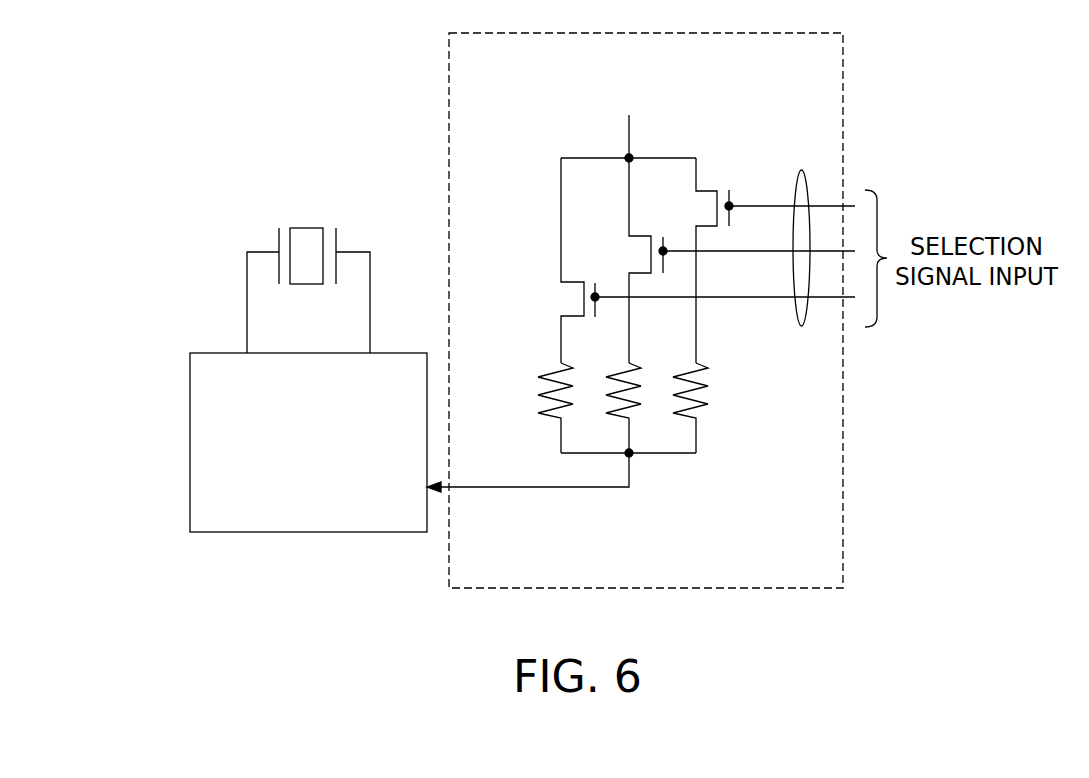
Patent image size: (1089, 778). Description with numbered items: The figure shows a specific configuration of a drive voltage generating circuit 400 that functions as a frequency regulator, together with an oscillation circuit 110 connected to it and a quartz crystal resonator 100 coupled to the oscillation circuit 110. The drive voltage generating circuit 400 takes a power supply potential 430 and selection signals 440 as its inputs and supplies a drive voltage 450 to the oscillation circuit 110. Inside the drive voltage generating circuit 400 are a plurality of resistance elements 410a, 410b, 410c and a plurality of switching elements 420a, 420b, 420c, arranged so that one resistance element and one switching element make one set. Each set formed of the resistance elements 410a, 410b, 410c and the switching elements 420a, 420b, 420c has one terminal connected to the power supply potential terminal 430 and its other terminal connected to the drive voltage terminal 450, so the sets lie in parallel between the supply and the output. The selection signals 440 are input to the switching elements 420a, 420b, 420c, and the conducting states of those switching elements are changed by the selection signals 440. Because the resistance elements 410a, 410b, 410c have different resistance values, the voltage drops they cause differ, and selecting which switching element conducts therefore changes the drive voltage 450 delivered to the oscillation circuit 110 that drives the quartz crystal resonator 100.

The quartz crystal resonator 100 is at (311, 228).
The oscillation circuit 110 is at (190, 398).
The drive voltage generating circuit 400 is at (843, 78).
The resistance element 410a is at (552, 370).
The resistance element 410b is at (640, 372).
The resistance element 410c is at (700, 386).
The switching element 420a is at (584, 292).
The switching element 420b is at (651, 248).
The switching element 420c is at (717, 202).
The power supply potential 430 is at (627, 137).
The selection signals 440 is at (798, 170).
The drive voltage 450 is at (635, 475).